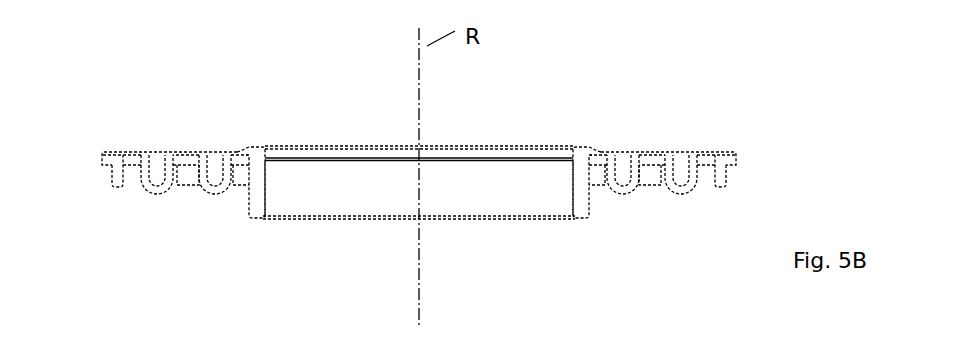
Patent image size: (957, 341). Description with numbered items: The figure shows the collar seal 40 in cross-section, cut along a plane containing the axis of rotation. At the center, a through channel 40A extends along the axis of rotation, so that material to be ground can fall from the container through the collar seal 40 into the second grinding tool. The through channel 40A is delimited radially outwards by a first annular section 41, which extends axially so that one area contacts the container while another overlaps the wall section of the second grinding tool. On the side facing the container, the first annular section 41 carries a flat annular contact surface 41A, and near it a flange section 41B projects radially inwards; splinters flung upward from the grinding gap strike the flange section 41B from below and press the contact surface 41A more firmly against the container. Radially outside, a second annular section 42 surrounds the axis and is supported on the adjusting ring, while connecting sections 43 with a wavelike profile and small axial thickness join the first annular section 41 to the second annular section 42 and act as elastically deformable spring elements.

The collar seal 40 is at (428, 189).
The through channel 40A is at (337, 198).
The first annular section 41 is at (251, 207).
The contact surface 41A is at (262, 146).
The flange section 41B is at (276, 167).
The second annular section 42 is at (110, 156).
The connecting section 43 is at (160, 193).